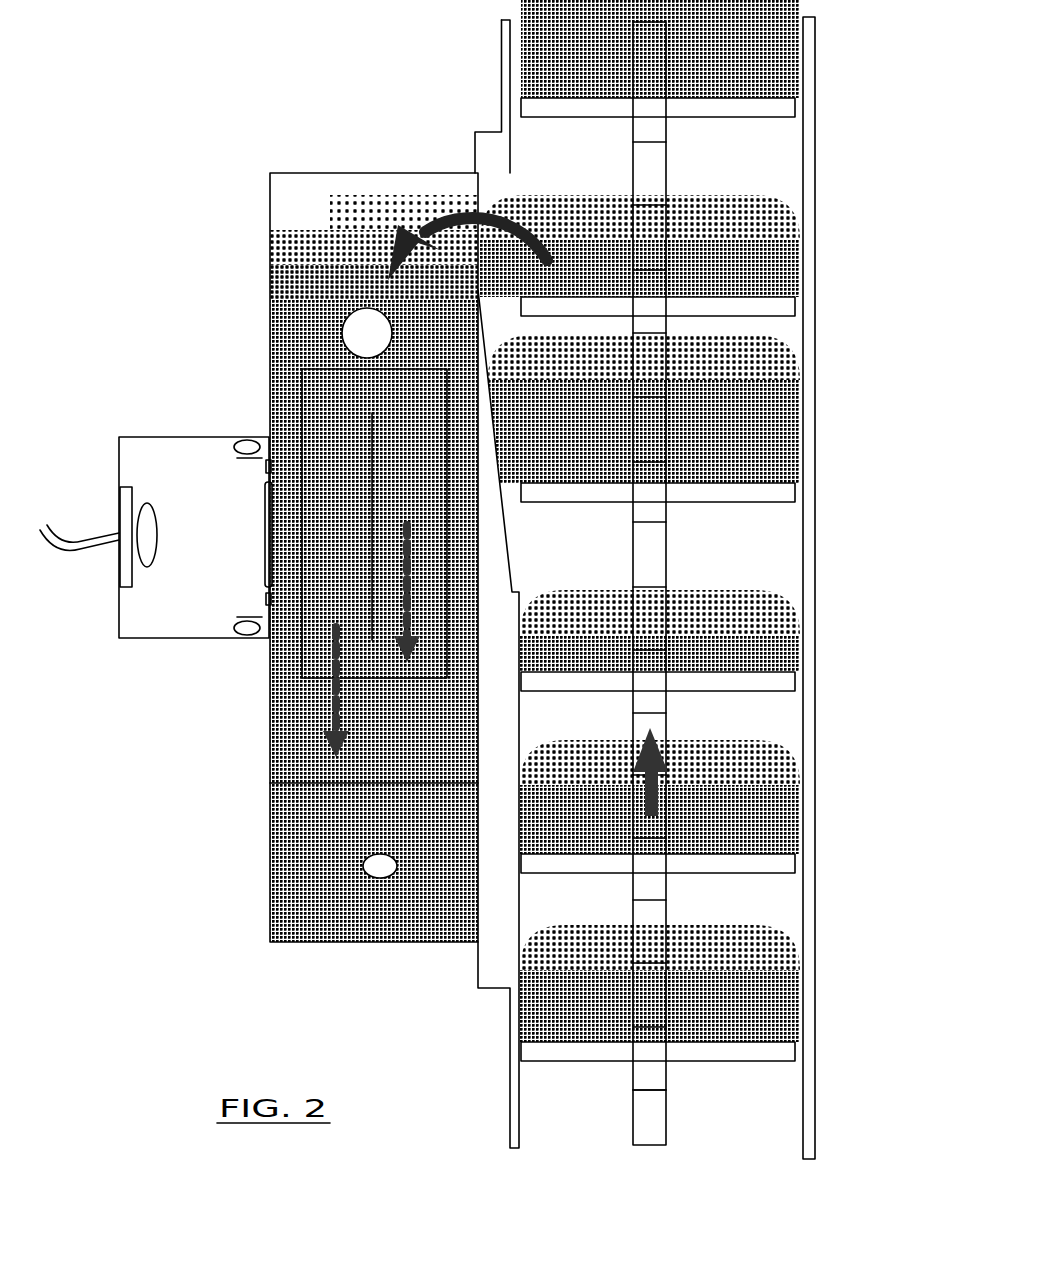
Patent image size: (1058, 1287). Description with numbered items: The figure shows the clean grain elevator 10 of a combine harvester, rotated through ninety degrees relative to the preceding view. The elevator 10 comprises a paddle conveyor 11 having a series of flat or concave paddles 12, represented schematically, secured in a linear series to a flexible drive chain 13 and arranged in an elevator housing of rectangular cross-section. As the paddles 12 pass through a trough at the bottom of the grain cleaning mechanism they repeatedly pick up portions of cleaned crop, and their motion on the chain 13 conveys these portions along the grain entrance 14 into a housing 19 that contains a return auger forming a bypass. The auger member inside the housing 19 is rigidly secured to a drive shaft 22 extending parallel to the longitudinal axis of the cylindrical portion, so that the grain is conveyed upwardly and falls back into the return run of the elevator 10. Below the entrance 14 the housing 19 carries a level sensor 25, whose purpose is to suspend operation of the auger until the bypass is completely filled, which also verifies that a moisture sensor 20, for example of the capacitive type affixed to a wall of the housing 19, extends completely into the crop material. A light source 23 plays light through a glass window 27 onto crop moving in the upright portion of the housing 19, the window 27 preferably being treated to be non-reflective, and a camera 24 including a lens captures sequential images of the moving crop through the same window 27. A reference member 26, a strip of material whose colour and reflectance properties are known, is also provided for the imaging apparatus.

The clean grain elevator 10 is at (840, 1065).
The paddle conveyor 11 is at (666, 173).
The paddles 12 is at (783, 97).
The flexible drive chain 13 is at (655, 1117).
The grain entrance 14 is at (460, 250).
The housing 19 is at (268, 237).
The moisture sensor 20 is at (302, 680).
The drive shaft 22 is at (363, 873).
The light source 23 is at (235, 437).
The camera 24 is at (117, 522).
The level sensor 25 is at (342, 330).
The reference member 26 is at (237, 465).
The glass window 27 is at (265, 523).